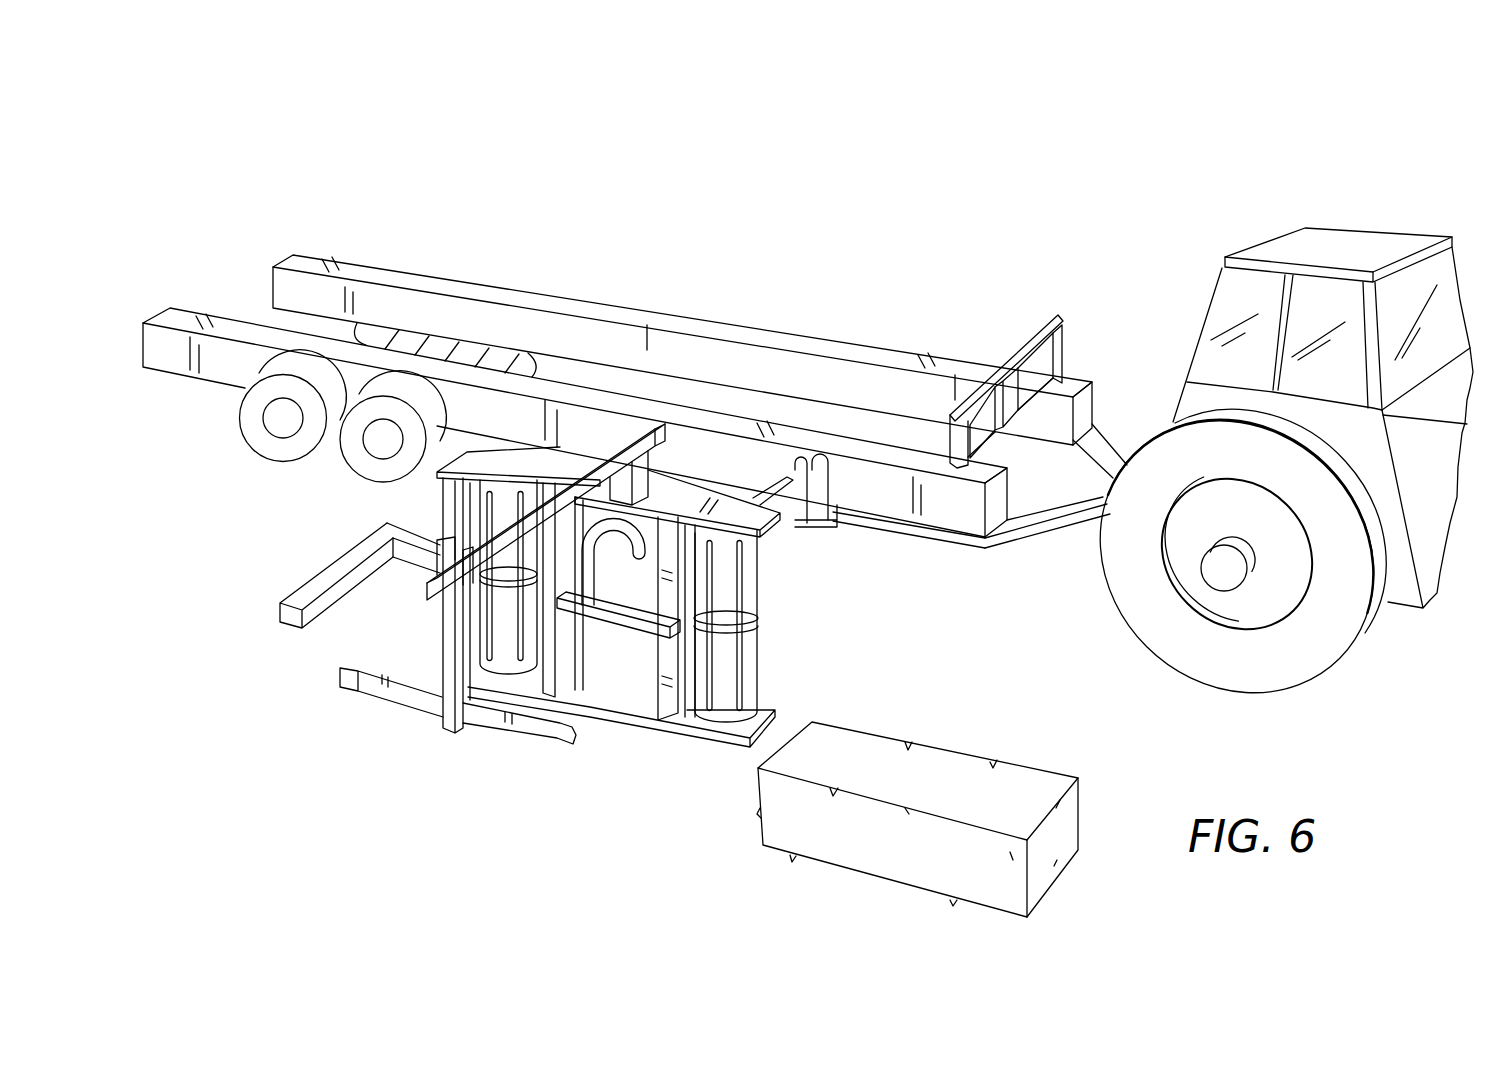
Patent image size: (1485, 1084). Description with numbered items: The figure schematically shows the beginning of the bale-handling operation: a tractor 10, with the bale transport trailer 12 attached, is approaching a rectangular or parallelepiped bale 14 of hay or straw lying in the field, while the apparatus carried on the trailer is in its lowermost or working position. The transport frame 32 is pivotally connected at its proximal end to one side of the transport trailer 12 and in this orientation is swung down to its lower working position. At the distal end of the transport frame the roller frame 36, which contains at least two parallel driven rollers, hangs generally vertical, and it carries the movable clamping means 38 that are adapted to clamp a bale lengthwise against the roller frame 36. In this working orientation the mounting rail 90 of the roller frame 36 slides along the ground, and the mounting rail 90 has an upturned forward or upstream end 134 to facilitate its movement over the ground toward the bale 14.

The tractor 10 is at (1276, 232).
The bale transport trailer 12 is at (515, 282).
The bale 14 is at (947, 778).
The transport frame 32 is at (767, 492).
The roller frame 36 is at (643, 722).
The clamping means 38 is at (440, 570).
The mounting rail 90 is at (725, 740).
The upturned forward end 134 is at (777, 720).